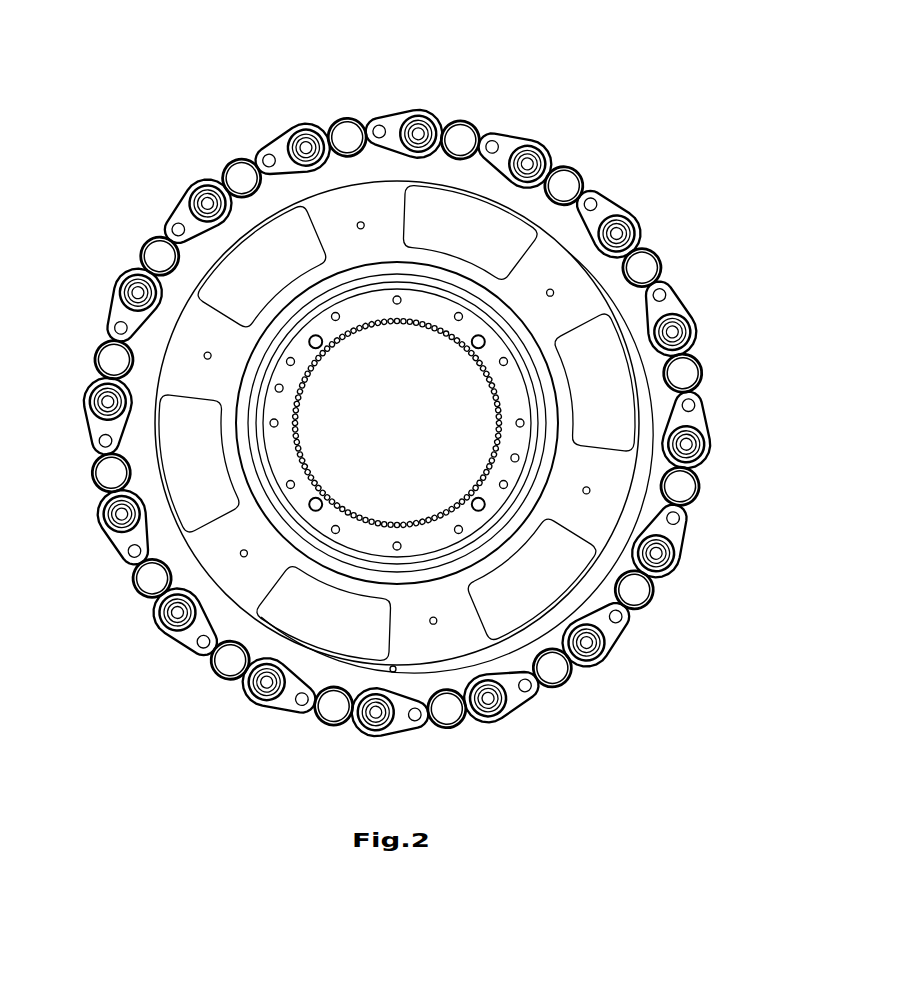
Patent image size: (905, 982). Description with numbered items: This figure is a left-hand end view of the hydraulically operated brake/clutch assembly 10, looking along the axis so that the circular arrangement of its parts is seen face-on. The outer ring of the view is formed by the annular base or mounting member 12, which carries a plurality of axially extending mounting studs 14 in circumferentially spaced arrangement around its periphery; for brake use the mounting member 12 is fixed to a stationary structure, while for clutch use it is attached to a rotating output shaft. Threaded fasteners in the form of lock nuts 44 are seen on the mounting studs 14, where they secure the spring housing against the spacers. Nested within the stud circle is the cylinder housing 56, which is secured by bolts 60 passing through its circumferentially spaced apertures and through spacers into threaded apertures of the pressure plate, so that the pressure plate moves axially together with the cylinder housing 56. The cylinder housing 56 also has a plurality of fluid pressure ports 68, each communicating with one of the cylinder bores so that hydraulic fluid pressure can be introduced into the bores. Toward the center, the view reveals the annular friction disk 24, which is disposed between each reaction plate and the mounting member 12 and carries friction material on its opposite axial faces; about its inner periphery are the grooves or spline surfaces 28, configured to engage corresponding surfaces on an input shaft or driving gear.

The hydraulically operated brake/clutch assembly 10 is at (251, 70).
The annular base or mounting member 12 is at (410, 408).
The mounting studs 14 is at (415, 130).
The annular friction disk 24 is at (332, 325).
The grooves or spline surfaces 28 is at (490, 465).
The lock nuts 44 is at (430, 125).
The cylinder housing 56 is at (315, 122).
The bolts 60 is at (348, 133).
The fluid pressure ports 68 is at (553, 291).